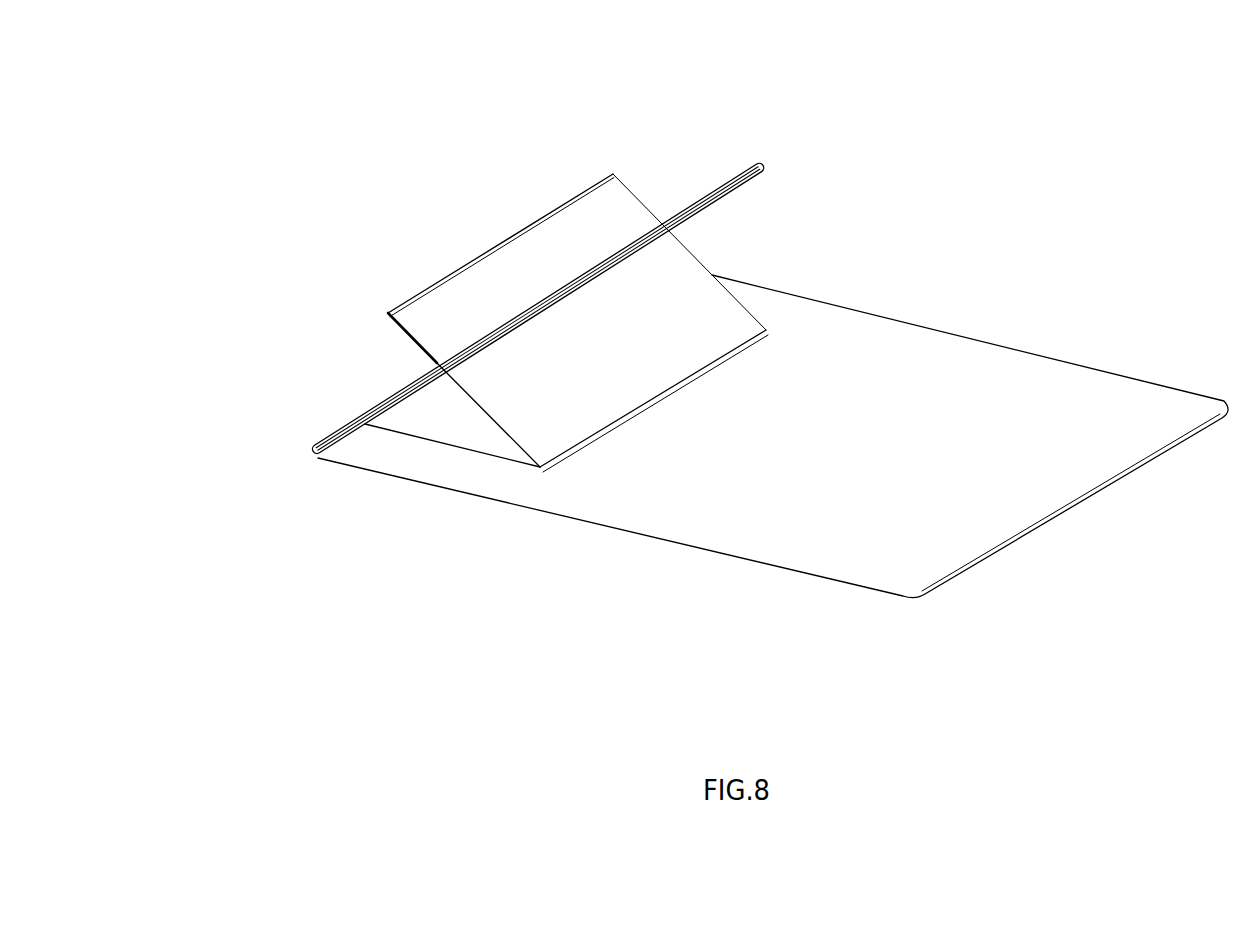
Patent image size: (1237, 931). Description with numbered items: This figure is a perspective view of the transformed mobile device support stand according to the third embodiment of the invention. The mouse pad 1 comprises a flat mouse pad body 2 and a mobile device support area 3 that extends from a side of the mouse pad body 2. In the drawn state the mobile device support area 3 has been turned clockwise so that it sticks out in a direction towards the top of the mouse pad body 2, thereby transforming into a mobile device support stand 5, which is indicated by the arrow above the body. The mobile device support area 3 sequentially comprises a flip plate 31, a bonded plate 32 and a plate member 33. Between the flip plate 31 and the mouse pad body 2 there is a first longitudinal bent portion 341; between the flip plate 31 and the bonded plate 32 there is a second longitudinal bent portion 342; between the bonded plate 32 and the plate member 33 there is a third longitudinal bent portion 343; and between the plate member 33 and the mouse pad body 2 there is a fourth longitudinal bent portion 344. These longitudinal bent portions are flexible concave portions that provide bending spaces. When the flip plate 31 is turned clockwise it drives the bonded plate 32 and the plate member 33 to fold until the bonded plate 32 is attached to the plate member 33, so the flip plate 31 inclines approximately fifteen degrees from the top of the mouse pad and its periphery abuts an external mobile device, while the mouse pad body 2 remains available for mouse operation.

The mouse pad 1 is at (231, 141).
The mouse pad body 2 is at (975, 380).
The mobile device support area 3 is at (264, 218).
The mobile device support stand 5 is at (920, 193).
The flip plate 31 is at (493, 327).
The bonded plate 32 is at (398, 328).
The plate member 33 is at (480, 388).
The first longitudinal bent portion 341 is at (323, 457).
The second longitudinal bent portion 342 is at (640, 235).
The third longitudinal bent portion 343 is at (563, 207).
The fourth longitudinal bent portion 344 is at (573, 451).